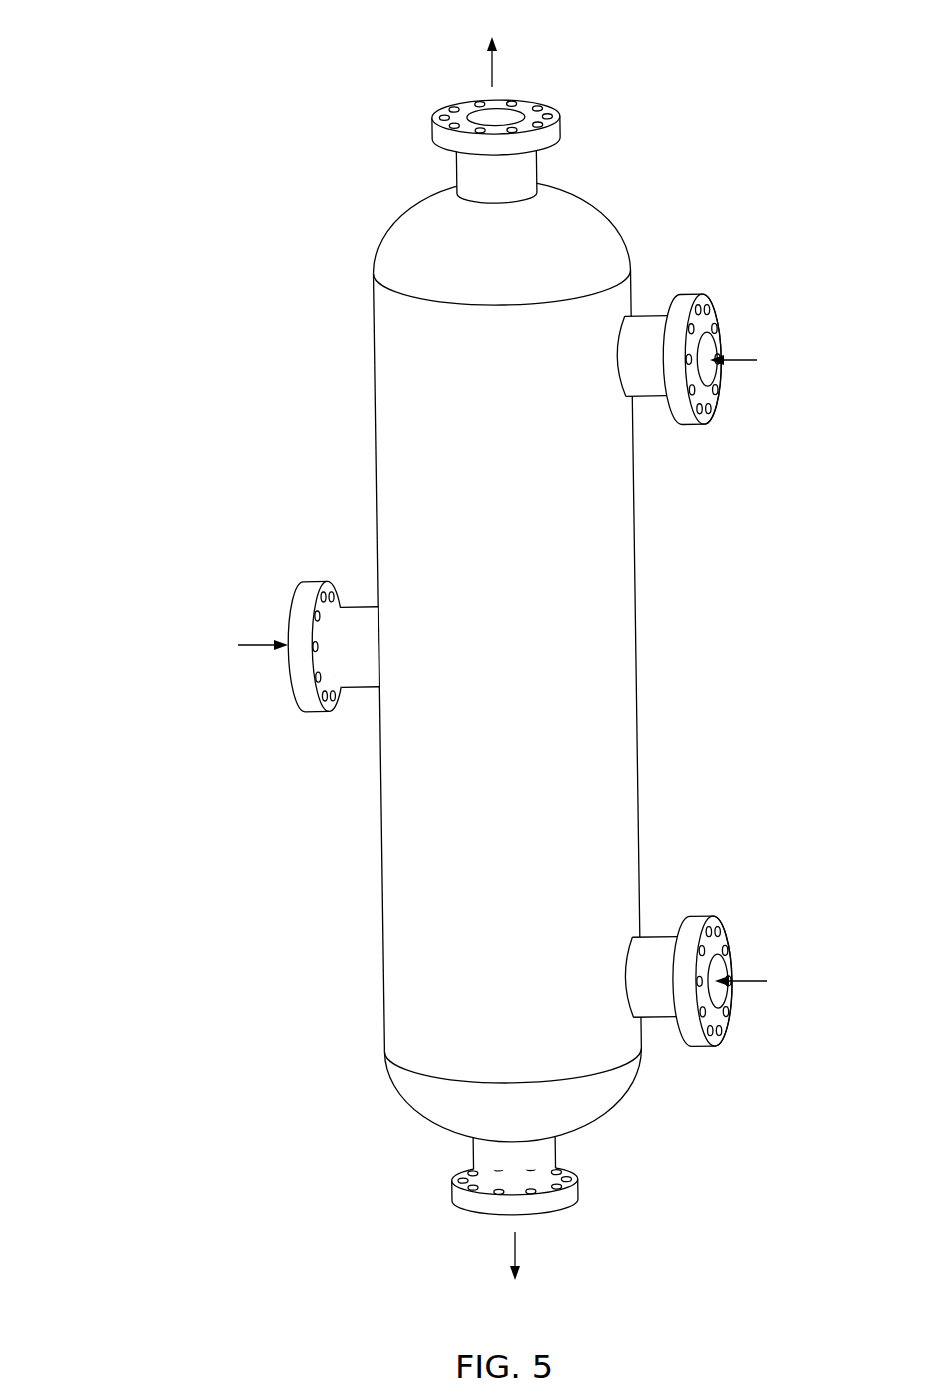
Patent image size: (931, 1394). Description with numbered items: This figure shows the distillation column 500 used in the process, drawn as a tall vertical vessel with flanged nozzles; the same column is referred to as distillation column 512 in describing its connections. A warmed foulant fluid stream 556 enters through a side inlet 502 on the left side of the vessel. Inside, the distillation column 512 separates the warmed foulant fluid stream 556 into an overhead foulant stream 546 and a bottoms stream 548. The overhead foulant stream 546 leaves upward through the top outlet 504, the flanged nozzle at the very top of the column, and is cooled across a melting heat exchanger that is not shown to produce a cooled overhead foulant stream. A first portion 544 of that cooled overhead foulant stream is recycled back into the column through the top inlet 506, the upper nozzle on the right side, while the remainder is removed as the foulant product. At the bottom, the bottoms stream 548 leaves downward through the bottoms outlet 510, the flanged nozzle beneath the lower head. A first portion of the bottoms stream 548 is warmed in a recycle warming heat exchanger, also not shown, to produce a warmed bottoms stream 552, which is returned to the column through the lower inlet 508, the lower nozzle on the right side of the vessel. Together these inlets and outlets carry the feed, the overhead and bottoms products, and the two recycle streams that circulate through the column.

The distillation column 500 is at (158, 75).
The side inlet 502 is at (318, 581).
The top outlet 504 is at (562, 122).
The top inlet 506 is at (693, 296).
The lower inlet 508 is at (698, 917).
The bottoms outlet 510 is at (580, 1193).
The distillation column 512 is at (373, 394).
The first portion of the cooled overhead foulant stream 544 is at (760, 360).
The overhead foulant stream 546 is at (492, 46).
The bottoms stream 548 is at (515, 1276).
The warmed bottoms stream 552 is at (768, 978).
The warmed foulant fluid stream 556 is at (234, 643).